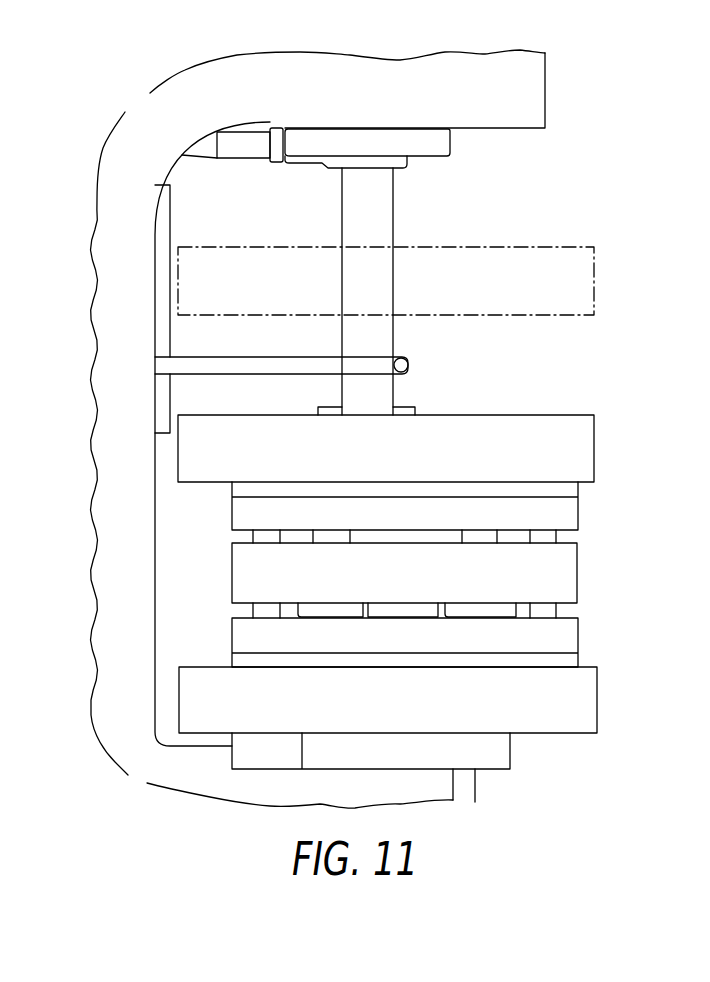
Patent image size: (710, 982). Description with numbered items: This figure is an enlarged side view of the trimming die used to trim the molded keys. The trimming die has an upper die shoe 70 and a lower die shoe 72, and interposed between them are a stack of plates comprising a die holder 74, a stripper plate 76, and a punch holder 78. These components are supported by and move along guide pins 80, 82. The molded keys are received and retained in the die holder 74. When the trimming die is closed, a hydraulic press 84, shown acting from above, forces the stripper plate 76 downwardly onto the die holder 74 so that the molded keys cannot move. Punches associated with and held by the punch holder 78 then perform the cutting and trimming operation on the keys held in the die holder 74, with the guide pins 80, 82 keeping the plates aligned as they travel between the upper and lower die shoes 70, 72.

The upper die shoe 70 is at (587, 440).
The lower die shoe 72 is at (582, 727).
The die holder 74 is at (567, 643).
The stripper plate 76 is at (577, 578).
The punch holder 78 is at (570, 510).
The guide pin 80 is at (262, 535).
The guide pin 82 is at (556, 537).
The hydraulic press 84 is at (385, 193).